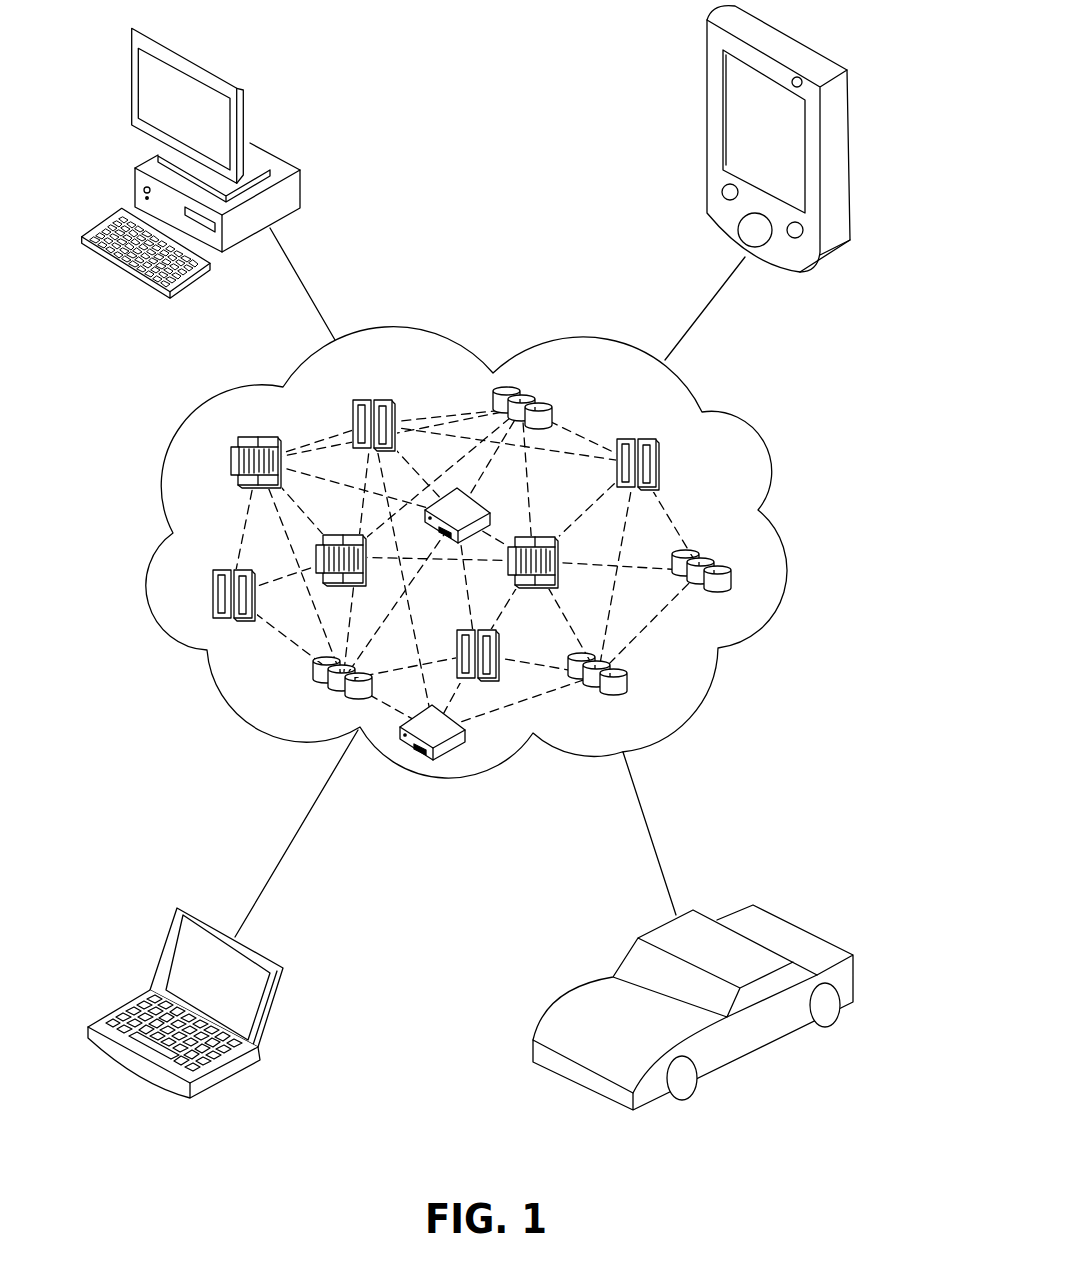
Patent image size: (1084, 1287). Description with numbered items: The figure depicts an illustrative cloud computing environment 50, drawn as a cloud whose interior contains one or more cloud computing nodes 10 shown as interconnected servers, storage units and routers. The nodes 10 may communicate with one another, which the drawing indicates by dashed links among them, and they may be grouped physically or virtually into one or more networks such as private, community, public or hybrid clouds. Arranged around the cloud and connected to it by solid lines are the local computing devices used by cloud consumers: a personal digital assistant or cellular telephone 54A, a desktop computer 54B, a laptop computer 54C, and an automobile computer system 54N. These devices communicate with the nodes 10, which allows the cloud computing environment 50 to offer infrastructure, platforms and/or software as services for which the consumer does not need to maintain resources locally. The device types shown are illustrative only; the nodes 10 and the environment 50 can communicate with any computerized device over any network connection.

The cloud computing nodes 10 is at (699, 488).
The cloud computing environment 50 is at (760, 628).
The personal digital assistant (PDA) or cellular telephone 54A is at (705, 83).
The desktop computer 54B is at (303, 188).
The laptop computer 54C is at (285, 977).
The automobile computer system 54N is at (857, 975).